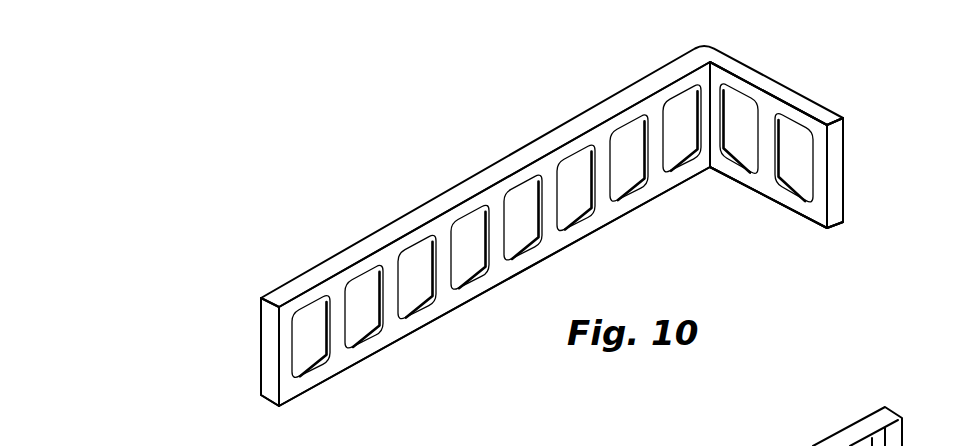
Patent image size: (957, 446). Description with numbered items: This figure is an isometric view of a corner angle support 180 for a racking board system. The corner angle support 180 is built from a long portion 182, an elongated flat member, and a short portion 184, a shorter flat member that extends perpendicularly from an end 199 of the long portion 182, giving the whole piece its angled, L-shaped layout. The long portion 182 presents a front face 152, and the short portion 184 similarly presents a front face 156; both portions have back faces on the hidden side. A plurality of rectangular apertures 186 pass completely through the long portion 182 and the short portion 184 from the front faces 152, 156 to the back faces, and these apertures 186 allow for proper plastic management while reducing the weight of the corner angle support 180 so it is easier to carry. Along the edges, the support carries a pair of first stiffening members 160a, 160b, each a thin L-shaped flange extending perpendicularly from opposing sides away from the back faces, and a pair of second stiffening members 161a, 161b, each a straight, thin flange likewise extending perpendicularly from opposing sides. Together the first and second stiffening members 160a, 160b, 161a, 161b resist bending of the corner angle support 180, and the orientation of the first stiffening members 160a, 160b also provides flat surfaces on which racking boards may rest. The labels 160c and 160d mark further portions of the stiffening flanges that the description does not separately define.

The corner angle support 180 is at (367, 198).
The first stiffening member 160a is at (313, 273).
The second stiffening member 161a is at (268, 352).
The first stiffening member 160b is at (318, 388).
The front face 152 is at (392, 323).
The long portion 182 is at (445, 250).
The apertures 186 is at (571, 176).
The end 199 is at (713, 88).
The short portion 184 is at (763, 138).
The front face 156 is at (763, 182).
The top edge of second wall 160c is at (818, 104).
The second stiffening member 161b is at (840, 178).
The bottom edge of second wall 160d is at (803, 217).